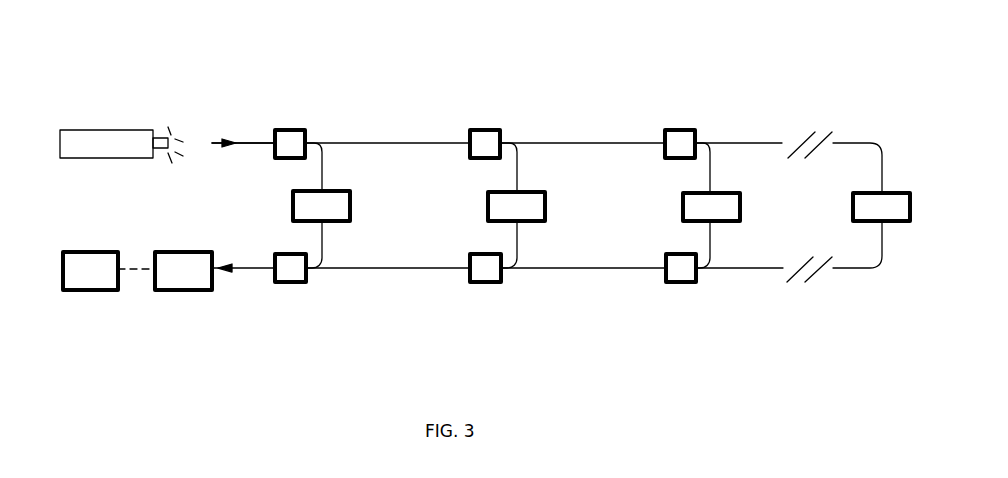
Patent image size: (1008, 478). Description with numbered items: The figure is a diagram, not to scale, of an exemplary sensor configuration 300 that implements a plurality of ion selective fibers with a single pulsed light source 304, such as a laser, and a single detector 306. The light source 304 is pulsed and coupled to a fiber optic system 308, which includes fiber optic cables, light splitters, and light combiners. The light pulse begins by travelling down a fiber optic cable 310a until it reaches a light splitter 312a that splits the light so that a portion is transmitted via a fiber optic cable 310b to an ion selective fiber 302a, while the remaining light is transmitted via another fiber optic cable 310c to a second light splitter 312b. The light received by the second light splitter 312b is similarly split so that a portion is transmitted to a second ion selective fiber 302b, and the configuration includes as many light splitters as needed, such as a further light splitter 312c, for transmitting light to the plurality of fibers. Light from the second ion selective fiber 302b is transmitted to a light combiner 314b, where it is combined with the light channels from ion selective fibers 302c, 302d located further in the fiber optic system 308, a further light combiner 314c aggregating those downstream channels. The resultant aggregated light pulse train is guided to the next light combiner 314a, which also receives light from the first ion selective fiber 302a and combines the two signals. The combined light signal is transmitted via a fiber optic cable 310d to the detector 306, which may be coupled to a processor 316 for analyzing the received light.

The sensor configuration 300 is at (207, 50).
The pulsed light source 304 is at (82, 130).
The detector 306 is at (183, 252).
The fiber optic system 308 is at (241, 168).
The fiber optic cable 310a is at (252, 143).
The fiber optic cable 310b is at (322, 178).
The fiber optic cable 310c is at (410, 143).
The fiber optic cable 310d is at (242, 270).
The light splitter 312a is at (292, 130).
The second light splitter 312b is at (490, 130).
The light splitter 312c is at (686, 130).
The ion selective fiber 302a is at (293, 202).
The second ion selective fiber 302b is at (488, 203).
The ion selective fiber 302c is at (683, 203).
The ion selective fiber 302d is at (853, 203).
The light combiner 314a is at (290, 282).
The light combiner 314b is at (488, 282).
The light combiner 314c is at (682, 282).
The processor 316 is at (85, 290).